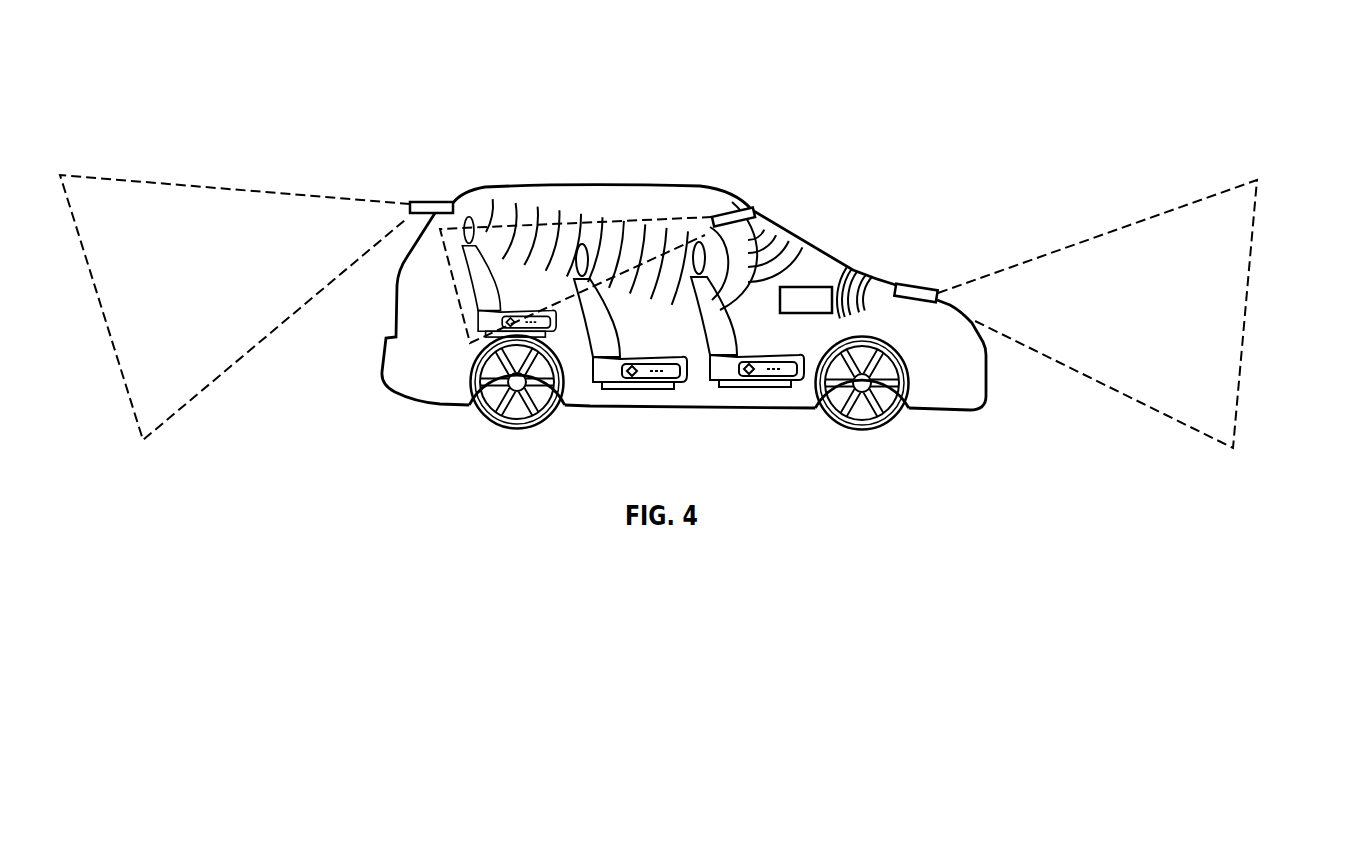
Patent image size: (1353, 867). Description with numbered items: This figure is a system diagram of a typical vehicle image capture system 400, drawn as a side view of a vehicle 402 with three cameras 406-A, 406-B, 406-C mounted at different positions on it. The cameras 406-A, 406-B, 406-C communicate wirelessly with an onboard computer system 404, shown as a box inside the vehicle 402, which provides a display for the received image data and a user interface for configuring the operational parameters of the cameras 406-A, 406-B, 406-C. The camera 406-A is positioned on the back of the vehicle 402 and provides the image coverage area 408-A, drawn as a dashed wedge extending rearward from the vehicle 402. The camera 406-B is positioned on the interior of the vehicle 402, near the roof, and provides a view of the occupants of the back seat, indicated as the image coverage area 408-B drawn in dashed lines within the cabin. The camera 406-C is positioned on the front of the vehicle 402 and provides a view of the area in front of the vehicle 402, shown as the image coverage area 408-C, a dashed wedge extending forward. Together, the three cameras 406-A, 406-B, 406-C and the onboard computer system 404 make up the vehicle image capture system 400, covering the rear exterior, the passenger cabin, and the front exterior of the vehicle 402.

The vehicle image capture system 400 is at (1270, 61).
The vehicle 402 is at (605, 183).
The onboard computer system 404 is at (805, 314).
The camera 406-A is at (432, 199).
The camera 406-B is at (730, 197).
The camera 406-C is at (916, 284).
The image coverage area 408-A is at (175, 183).
The image coverage area 408-B is at (452, 283).
The image coverage area 408-C is at (1105, 228).